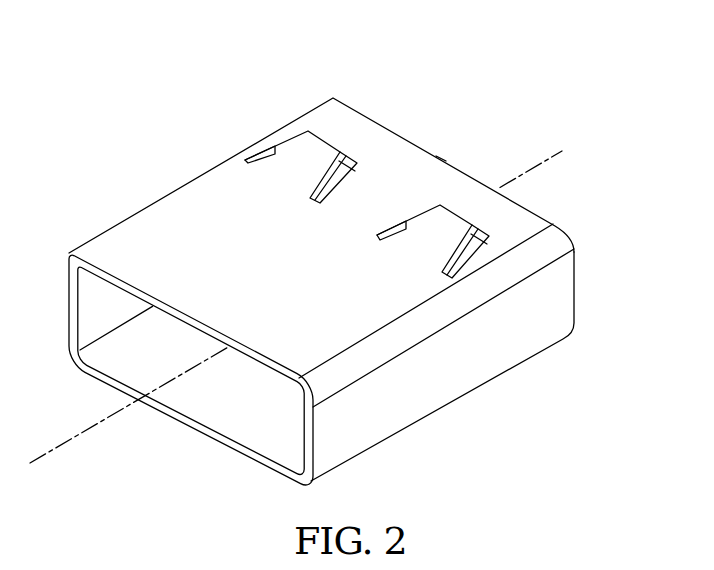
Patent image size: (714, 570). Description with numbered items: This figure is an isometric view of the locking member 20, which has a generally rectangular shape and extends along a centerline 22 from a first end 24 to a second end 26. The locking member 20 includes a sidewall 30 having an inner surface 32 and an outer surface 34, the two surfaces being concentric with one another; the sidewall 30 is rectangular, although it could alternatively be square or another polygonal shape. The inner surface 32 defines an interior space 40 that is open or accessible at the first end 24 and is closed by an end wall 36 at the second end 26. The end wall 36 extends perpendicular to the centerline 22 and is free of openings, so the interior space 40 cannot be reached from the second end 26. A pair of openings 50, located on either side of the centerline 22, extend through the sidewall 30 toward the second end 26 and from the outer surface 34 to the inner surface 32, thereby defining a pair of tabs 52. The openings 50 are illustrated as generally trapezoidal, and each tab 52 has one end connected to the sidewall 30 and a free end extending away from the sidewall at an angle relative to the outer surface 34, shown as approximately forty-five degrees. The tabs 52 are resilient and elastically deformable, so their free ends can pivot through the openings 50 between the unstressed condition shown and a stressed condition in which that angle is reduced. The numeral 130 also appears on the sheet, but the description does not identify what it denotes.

The locking member 20 is at (192, 171).
The centerline 22 is at (41, 456).
The first end 24 is at (86, 206).
The second end 26 is at (596, 351).
The sidewall 30 is at (430, 397).
The inner surface 32 is at (104, 346).
The outer surface 34 is at (293, 287).
The end wall 36 is at (445, 159).
The interior space 40 is at (257, 407).
The openings 50 is at (351, 162).
The tabs 52 is at (273, 159).
The shielding assembly 130 is at (343, 72).